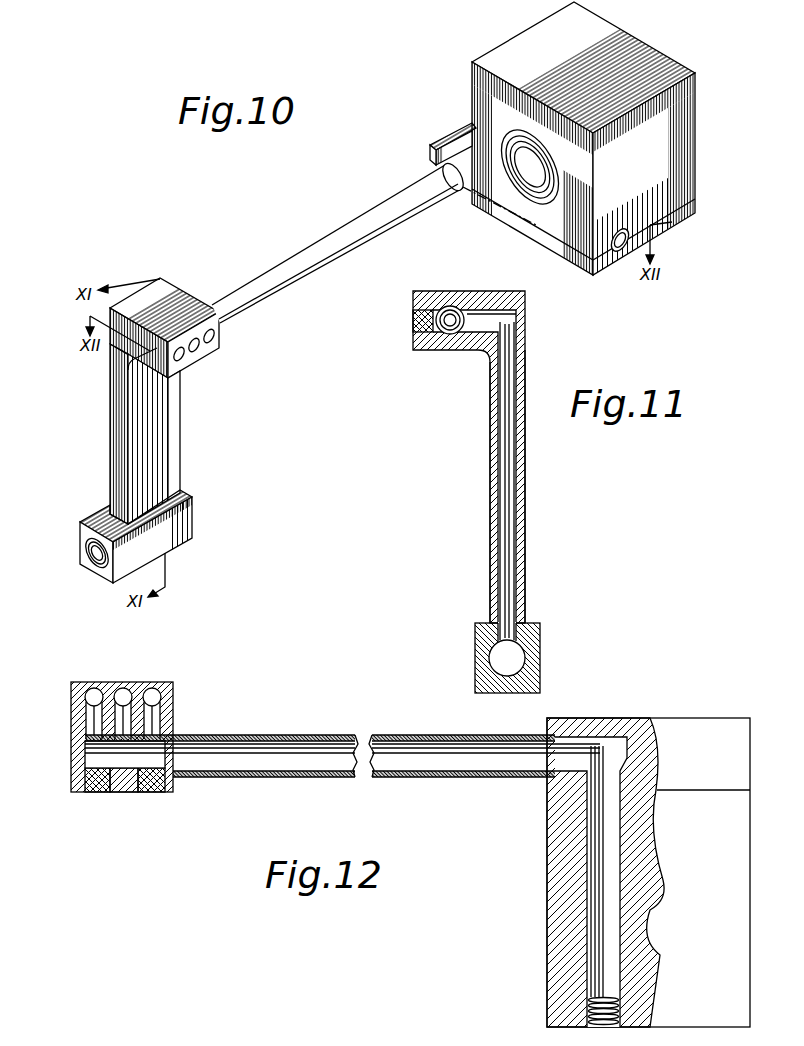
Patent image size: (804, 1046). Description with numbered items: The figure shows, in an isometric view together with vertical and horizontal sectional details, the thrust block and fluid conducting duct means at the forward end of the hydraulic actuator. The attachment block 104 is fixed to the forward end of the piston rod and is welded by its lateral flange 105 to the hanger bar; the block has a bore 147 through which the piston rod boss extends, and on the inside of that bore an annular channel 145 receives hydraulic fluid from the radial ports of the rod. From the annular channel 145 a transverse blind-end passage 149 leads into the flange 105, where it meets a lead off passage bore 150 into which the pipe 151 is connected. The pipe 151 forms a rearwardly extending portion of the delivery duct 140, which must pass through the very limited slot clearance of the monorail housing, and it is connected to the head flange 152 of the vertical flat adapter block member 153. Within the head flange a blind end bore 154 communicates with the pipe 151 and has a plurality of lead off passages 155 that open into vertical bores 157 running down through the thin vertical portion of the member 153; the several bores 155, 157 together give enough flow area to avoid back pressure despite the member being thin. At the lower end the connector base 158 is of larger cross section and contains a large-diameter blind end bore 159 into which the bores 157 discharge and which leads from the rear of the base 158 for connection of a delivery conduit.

In FIG. 10, the attachment block 104 is at (678, 224).
In FIG. 12, the attachment block 104 is at (550, 978).
In FIG. 10, the lateral flange 105 is at (458, 140).
In FIG. 12, the lateral flange 105 is at (697, 728).
In FIG. 10, the delivery duct 140 is at (329, 270).
In FIG. 12, the delivery duct 140 is at (320, 730).
In FIG. 10, the annular channel 145 is at (537, 165).
In FIG. 10, the bore 147 is at (535, 200).
In FIG. 10, the passage 149 is at (557, 184).
In FIG. 12, the passage 149 is at (602, 890).
In FIG. 12, the lead off passage bore 150 is at (582, 750).
In FIG. 10, the pipe 151 is at (382, 224).
In FIG. 12, the pipe 151 is at (462, 778).
In FIG. 10, the head flange 152 is at (212, 352).
In FIG. 11, the head flange 152 is at (442, 296).
In FIG. 12, the head flange 152 is at (173, 793).
In FIG. 10, the vertical flat adapter block member 153 is at (171, 452).
In FIG. 11, the vertical flat adapter block member 153 is at (522, 479).
In FIG. 11, the blind end bore 154 is at (455, 326).
In FIG. 12, the blind end bore 154 is at (123, 758).
In FIG. 11, the lead off passages 155 is at (510, 314).
In FIG. 12, the lead off passages 155 is at (88, 727).
In FIG. 11, the vertical bores 157 is at (507, 548).
In FIG. 12, the vertical bores 157 is at (152, 689).
In FIG. 10, the connector base 158 is at (193, 521).
In FIG. 11, the connector base 158 is at (537, 625).
In FIG. 11, the blind end bore 159 is at (512, 660).